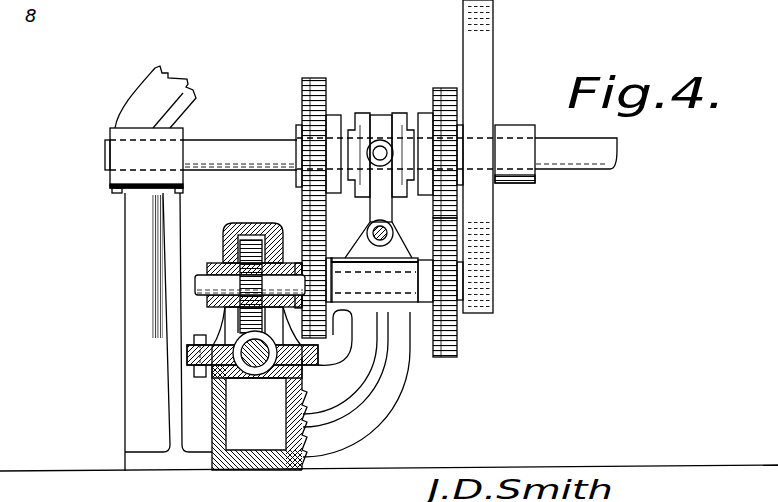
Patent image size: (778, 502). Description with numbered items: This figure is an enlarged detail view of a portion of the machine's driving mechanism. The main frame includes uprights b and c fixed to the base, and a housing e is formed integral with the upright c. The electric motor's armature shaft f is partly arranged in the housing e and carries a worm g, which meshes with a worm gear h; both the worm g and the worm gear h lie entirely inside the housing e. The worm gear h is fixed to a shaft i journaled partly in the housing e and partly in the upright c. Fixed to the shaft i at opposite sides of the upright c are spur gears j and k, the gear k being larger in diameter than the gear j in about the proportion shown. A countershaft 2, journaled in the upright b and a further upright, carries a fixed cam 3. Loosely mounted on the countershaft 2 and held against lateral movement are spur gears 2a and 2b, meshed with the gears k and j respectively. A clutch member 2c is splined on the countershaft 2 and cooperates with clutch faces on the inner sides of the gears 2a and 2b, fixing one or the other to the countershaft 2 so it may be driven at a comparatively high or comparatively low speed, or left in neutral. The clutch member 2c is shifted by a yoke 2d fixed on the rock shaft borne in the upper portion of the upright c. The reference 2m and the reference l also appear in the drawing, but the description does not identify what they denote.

The countershaft 2 is at (210, 139).
The lever 2m is at (170, 64).
The spur gear 2a is at (438, 88).
The spur gear 2b is at (313, 78).
The clutch member 2c is at (365, 112).
The yoke 2d is at (377, 209).
The cam 3 is at (489, 58).
The upright b is at (126, 227).
The upright c is at (390, 380).
The housing e is at (262, 440).
The armature shaft f is at (253, 370).
The worm g is at (192, 367).
The worm gear h is at (247, 248).
The shaft i is at (208, 284).
The spur gear j is at (313, 265).
The spur gear k is at (460, 348).
The pin l is at (393, 233).